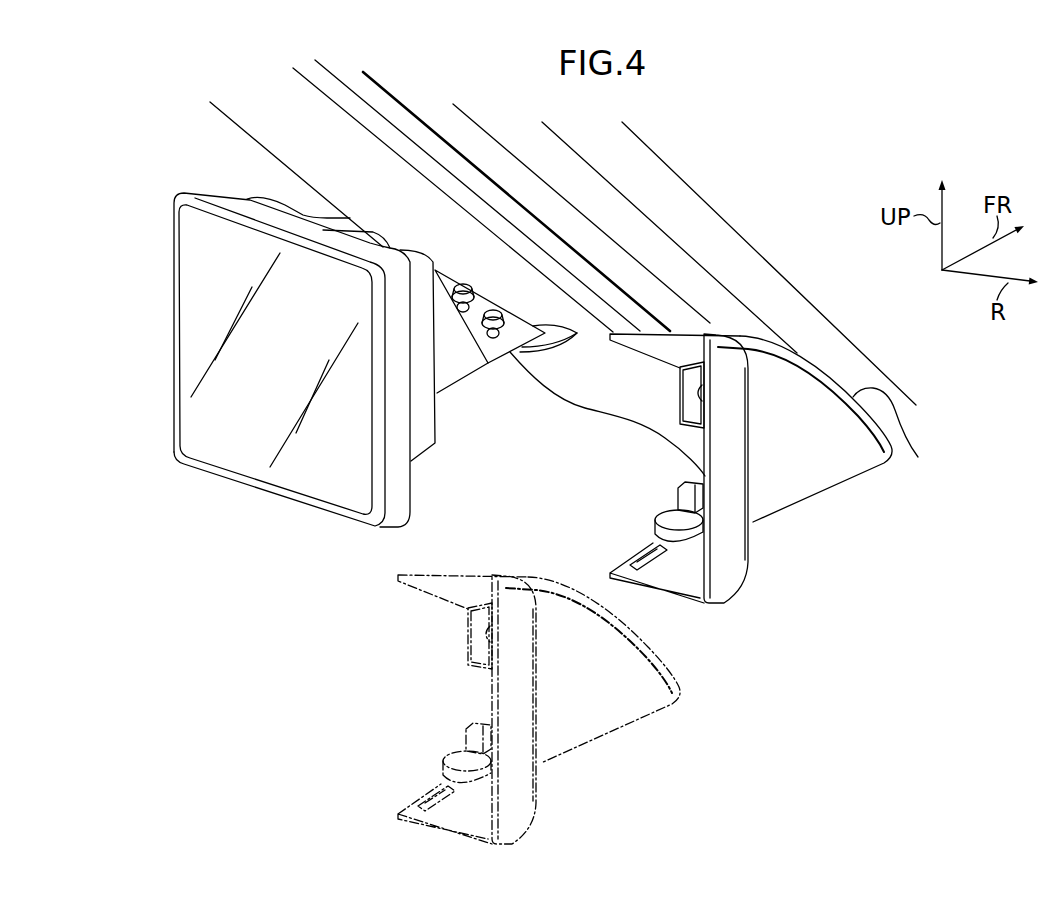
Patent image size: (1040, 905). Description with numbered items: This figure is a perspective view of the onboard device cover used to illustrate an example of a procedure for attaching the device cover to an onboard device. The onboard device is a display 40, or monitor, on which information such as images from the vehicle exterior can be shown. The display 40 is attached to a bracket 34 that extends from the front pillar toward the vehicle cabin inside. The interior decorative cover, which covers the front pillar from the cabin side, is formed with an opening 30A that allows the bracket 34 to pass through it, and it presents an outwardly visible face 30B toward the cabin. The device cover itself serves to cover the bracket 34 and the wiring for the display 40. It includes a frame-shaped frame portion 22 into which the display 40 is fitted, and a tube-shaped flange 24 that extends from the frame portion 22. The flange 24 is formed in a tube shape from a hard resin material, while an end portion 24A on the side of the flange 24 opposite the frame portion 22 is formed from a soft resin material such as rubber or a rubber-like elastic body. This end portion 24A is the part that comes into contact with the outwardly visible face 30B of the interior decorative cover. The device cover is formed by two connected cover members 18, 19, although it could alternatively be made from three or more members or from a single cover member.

The cover member 18 is at (258, 195).
The display 40 is at (305, 472).
The outwardly visible face 30B is at (328, 138).
The opening 30A is at (558, 325).
The bracket 34 is at (505, 360).
The frame portion 22 is at (750, 573).
The flange 24 is at (840, 487).
The end portion 24A is at (918, 457).
The cover member 19 is at (729, 609).